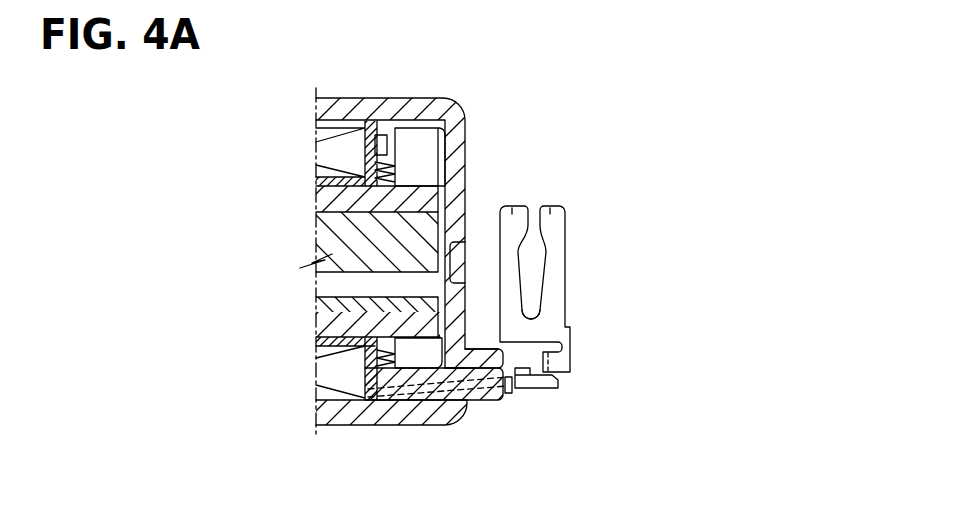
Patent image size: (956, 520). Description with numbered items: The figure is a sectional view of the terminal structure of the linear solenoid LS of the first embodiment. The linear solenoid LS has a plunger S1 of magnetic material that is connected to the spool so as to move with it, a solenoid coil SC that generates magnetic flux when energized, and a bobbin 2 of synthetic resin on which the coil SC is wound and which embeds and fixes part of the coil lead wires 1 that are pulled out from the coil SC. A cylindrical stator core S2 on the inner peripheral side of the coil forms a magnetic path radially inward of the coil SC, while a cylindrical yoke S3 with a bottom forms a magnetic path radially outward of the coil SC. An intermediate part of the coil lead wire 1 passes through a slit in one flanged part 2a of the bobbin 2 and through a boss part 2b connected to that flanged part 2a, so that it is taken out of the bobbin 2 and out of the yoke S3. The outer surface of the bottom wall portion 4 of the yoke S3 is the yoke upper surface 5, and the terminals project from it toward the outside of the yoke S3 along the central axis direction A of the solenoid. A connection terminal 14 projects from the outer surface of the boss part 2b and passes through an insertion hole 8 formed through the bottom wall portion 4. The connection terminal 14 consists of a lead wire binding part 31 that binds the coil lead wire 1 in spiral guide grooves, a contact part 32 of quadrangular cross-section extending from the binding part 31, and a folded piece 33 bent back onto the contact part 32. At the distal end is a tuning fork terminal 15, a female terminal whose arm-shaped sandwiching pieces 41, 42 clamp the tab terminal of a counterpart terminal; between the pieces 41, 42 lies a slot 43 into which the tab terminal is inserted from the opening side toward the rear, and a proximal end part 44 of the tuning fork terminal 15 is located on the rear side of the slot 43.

The coil lead wire 1 is at (386, 418).
The bobbin 2 is at (318, 345).
The flanged part 2a is at (362, 412).
The boss part 2b is at (424, 418).
The bottom wall portion 4 is at (457, 118).
The yoke upper surface 5 is at (468, 210).
The insertion hole 8 is at (464, 410).
The connection terminal 14 is at (615, 462).
The tuning fork terminal 15 is at (583, 140).
The lead wire binding part 31 is at (512, 396).
The contact part 32 is at (536, 390).
The folded piece 33 is at (560, 388).
The sandwiching piece 41 is at (512, 208).
The sandwiching piece 42 is at (550, 208).
The slot 43 is at (544, 262).
The proximal end part 44 is at (571, 350).
The plunger S1 is at (318, 238).
The stator core S2 is at (318, 206).
The yoke S3 is at (395, 98).
The solenoid coil SC is at (352, 138).
The linear solenoid LS is at (481, 121).
The central axis direction A is at (595, 386).